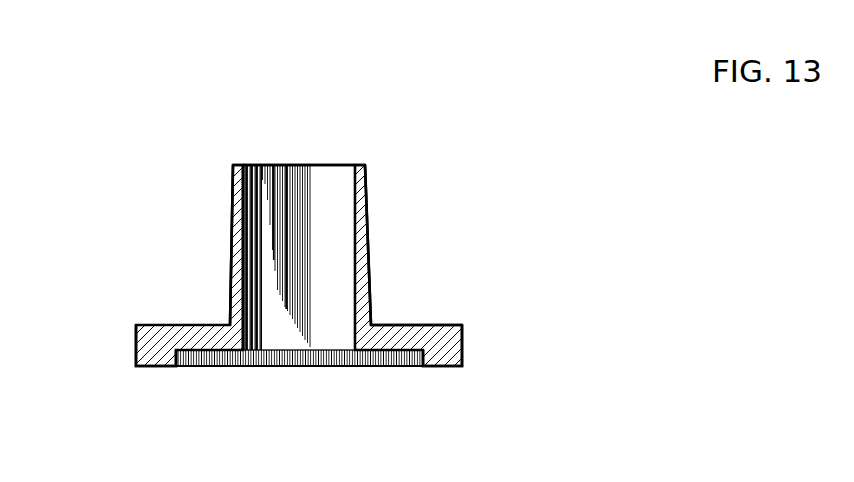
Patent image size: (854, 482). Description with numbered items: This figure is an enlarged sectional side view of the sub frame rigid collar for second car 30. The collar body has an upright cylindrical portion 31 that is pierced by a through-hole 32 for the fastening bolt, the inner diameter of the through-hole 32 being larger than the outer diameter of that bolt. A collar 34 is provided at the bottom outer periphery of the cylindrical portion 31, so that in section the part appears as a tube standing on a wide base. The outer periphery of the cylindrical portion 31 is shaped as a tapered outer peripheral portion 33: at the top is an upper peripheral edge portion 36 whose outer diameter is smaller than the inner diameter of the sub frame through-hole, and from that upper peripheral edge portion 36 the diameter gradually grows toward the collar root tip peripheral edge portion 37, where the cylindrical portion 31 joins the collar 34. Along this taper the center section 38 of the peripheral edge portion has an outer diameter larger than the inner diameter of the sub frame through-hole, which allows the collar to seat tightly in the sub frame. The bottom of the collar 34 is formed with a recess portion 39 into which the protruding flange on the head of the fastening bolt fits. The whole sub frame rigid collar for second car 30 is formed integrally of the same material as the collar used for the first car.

The sub frame rigid collar for second car 30 is at (258, 128).
The cylindrical portion 31 is at (188, 268).
The through-hole 32 is at (313, 222).
The tapered outer peripheral portion 33 is at (232, 228).
The collar 34 is at (136, 343).
The upper peripheral edge portion 36 is at (358, 165).
The collar root tip peripheral edge portion 37 is at (373, 321).
The center section of the peripheral edge portion 38 is at (370, 257).
The recess portion 39 is at (394, 354).